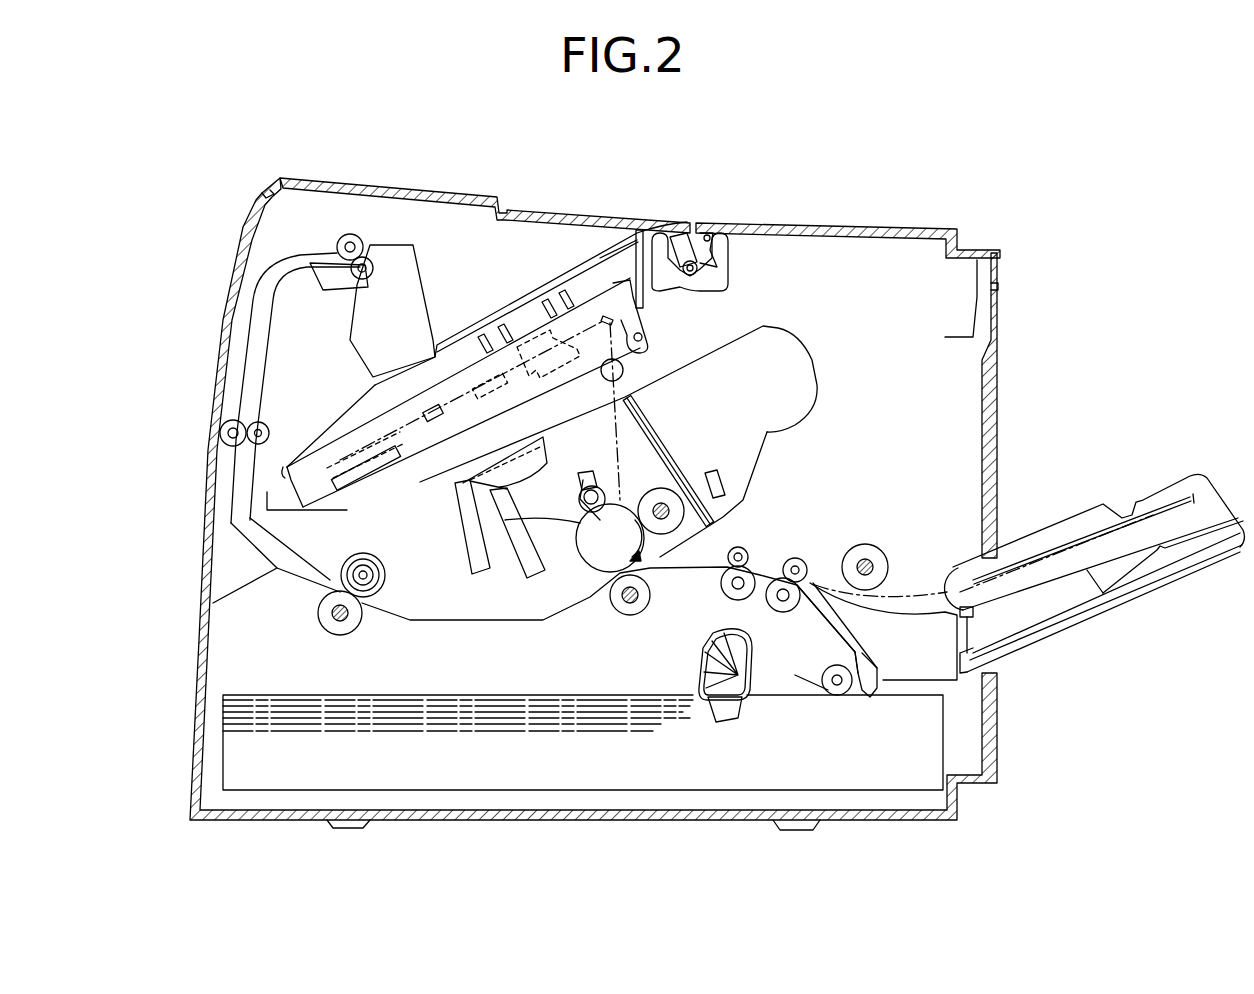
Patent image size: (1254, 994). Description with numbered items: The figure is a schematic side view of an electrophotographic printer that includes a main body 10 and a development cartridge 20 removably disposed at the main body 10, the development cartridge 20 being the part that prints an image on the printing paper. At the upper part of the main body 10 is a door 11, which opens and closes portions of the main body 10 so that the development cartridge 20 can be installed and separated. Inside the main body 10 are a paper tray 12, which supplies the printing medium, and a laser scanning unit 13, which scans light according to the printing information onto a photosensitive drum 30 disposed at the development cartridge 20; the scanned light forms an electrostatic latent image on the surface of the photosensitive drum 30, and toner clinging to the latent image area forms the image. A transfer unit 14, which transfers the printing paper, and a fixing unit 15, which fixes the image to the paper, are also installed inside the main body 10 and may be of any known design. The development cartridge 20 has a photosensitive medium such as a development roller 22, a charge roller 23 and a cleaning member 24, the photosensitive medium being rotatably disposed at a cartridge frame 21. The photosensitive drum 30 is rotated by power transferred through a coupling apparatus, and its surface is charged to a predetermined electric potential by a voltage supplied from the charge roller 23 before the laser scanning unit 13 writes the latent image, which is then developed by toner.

The main body 10 is at (1000, 418).
The door 11 is at (930, 228).
The paper tray 12 is at (843, 793).
The laser scanning unit 13 is at (387, 478).
The transfer unit 14 is at (703, 588).
The fixing unit 15 is at (376, 622).
The development cartridge 20 is at (832, 350).
The cartridge frame 21 is at (767, 430).
The development roller 22 is at (673, 470).
The charge roller 23 is at (578, 473).
The cleaning member 24 is at (520, 520).
The photosensitive drum 30 is at (590, 588).